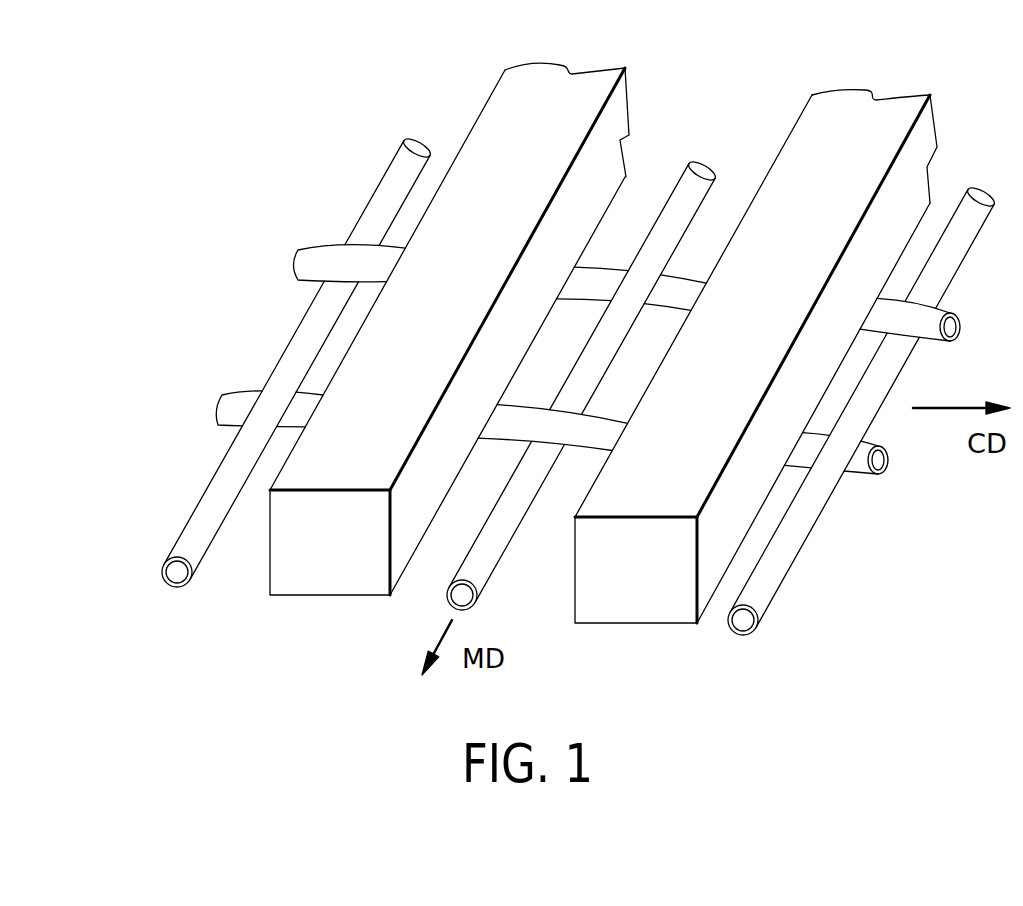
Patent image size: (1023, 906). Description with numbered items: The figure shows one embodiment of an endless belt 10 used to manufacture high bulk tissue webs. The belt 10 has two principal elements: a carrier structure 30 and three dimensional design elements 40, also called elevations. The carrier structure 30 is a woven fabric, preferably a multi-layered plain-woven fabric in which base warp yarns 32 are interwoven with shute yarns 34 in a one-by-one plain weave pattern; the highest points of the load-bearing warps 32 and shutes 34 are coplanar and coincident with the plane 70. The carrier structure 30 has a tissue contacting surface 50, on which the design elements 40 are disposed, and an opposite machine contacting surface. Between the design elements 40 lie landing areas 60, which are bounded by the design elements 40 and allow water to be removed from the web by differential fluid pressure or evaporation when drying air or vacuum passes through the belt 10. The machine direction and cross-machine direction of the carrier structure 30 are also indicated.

The endless belt 10 is at (251, 121).
The carrier structure 30 is at (288, 343).
The base warp yarns 32 is at (745, 625).
The shute yarns 34 is at (888, 466).
The design elements 40 is at (523, 100).
The tissue contacting surface 50 is at (560, 387).
The landing areas 60 is at (652, 180).
The plane 70 is at (197, 383).